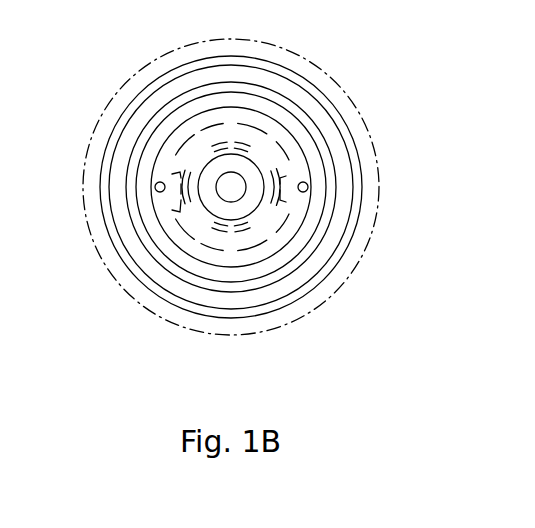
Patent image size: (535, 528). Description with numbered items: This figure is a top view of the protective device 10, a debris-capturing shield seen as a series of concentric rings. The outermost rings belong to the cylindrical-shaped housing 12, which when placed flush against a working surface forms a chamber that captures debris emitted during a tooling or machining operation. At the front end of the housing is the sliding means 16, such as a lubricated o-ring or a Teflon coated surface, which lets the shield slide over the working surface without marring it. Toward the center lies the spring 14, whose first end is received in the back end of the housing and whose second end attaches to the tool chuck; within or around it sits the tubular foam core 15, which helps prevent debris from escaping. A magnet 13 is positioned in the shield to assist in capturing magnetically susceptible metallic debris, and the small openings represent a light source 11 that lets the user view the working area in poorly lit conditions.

The protective device 10 is at (138, 300).
The light source 11 is at (155, 187).
The cylindrical-shaped housing 12 is at (273, 180).
The magnet 13 is at (143, 163).
The spring 14 is at (200, 222).
The foam core 15 is at (278, 163).
The sliding means 16 is at (330, 102).